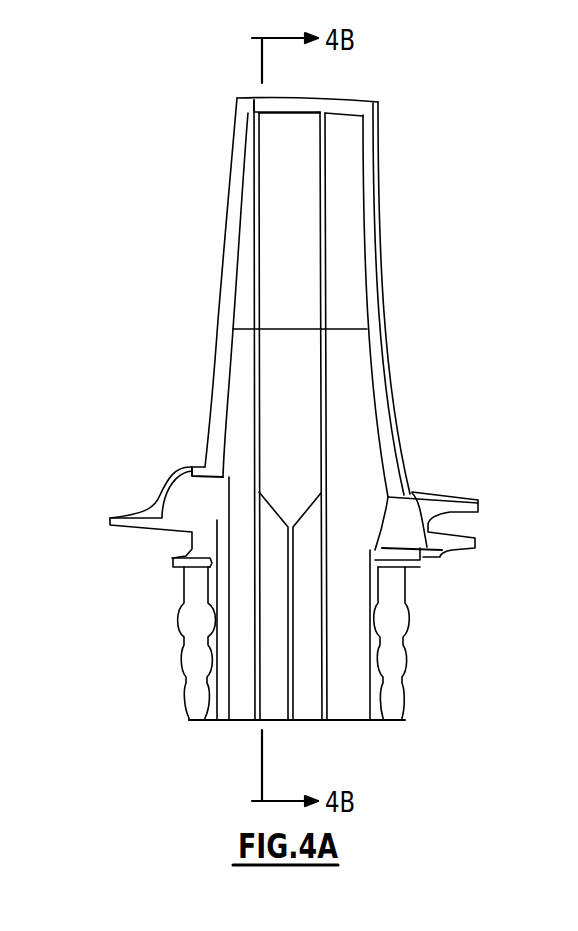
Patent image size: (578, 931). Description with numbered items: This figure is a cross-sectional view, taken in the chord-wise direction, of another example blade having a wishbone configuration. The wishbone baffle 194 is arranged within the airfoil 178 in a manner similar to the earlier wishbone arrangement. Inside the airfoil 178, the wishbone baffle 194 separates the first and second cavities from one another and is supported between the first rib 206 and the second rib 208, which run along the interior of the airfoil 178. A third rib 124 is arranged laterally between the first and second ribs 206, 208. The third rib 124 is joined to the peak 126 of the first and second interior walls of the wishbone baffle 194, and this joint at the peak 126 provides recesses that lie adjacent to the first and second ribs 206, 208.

The airfoil 178 is at (299, 409).
The wishbone baffle 194 is at (292, 371).
The first rib 206 is at (257, 403).
The second rib 208 is at (323, 418).
The third rib 124 is at (288, 543).
The peak 126 is at (290, 527).